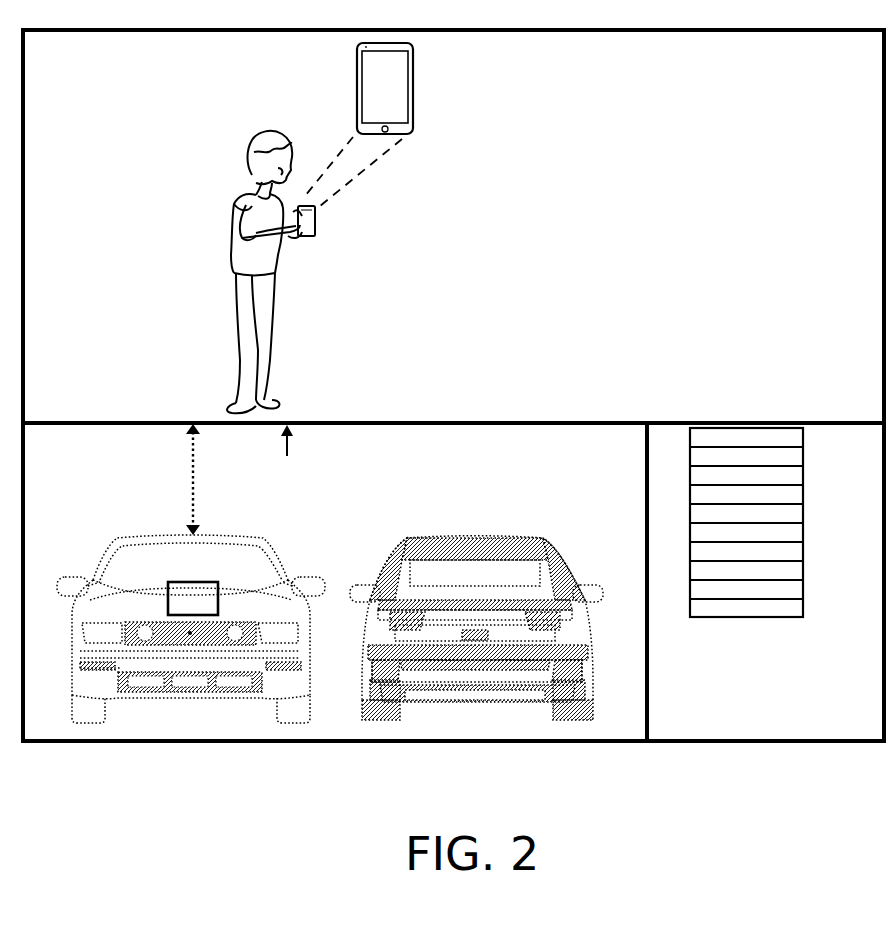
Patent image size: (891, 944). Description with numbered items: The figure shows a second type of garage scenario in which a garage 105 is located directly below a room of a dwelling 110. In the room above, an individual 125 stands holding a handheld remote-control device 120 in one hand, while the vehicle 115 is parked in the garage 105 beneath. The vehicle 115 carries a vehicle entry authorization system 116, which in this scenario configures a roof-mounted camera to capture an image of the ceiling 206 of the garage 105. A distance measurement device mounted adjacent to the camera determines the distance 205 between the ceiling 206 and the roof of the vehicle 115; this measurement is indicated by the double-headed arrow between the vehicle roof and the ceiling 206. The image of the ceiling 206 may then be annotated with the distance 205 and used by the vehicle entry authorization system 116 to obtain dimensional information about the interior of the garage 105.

The dwelling 110 is at (838, 77).
The garage 105 is at (614, 463).
The handheld remote-control device 120 is at (355, 97).
The individual 125 is at (212, 217).
The vehicle 115 is at (103, 513).
The vehicle entry authorization system 116 is at (210, 610).
The distance 205 is at (196, 490).
The ceiling 206 is at (287, 453).